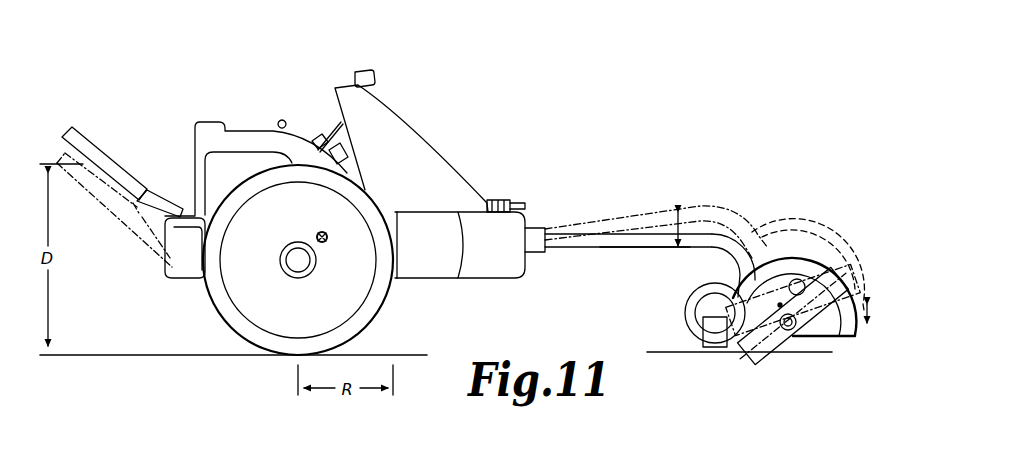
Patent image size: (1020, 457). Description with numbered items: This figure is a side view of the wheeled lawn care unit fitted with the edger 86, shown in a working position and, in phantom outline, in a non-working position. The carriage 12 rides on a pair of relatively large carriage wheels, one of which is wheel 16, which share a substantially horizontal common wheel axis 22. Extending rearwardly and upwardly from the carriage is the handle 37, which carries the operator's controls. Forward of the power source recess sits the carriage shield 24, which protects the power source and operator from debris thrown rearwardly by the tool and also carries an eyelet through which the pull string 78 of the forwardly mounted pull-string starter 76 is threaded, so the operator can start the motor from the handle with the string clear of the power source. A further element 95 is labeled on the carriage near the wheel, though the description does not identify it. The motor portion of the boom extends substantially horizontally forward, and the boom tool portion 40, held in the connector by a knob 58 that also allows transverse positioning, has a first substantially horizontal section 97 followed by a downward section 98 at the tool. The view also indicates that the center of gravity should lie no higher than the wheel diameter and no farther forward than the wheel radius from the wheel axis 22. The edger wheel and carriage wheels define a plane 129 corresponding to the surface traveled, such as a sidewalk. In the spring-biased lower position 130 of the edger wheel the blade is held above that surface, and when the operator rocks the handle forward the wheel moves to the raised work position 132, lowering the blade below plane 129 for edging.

The carriage 12 is at (152, 279).
The carriage wheel 16 is at (380, 303).
The wheel axis 22 is at (293, 262).
The carriage shield 24 is at (412, 122).
The handle 37 is at (115, 160).
The boom tool portion 40 is at (653, 232).
The knob 58 is at (502, 198).
The pull-string starter 76 is at (358, 68).
The pull string 78 is at (336, 122).
The edger 86 is at (857, 262).
The fastener 95 is at (327, 236).
The first substantially horizontal section 97 is at (617, 250).
The downward section 98 is at (722, 262).
The plane 129 is at (178, 357).
The lower position 130 is at (792, 206).
The raised work position 132 is at (875, 313).